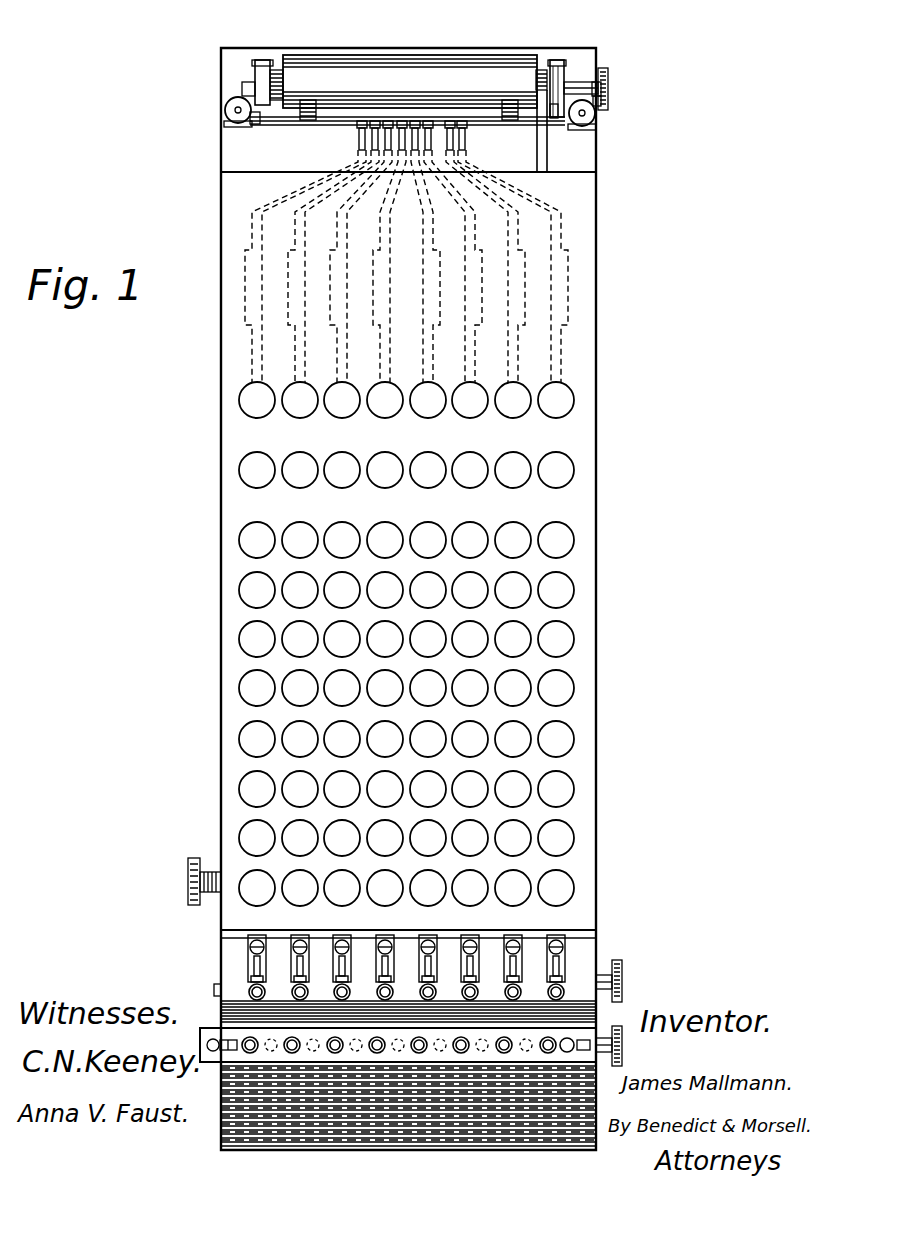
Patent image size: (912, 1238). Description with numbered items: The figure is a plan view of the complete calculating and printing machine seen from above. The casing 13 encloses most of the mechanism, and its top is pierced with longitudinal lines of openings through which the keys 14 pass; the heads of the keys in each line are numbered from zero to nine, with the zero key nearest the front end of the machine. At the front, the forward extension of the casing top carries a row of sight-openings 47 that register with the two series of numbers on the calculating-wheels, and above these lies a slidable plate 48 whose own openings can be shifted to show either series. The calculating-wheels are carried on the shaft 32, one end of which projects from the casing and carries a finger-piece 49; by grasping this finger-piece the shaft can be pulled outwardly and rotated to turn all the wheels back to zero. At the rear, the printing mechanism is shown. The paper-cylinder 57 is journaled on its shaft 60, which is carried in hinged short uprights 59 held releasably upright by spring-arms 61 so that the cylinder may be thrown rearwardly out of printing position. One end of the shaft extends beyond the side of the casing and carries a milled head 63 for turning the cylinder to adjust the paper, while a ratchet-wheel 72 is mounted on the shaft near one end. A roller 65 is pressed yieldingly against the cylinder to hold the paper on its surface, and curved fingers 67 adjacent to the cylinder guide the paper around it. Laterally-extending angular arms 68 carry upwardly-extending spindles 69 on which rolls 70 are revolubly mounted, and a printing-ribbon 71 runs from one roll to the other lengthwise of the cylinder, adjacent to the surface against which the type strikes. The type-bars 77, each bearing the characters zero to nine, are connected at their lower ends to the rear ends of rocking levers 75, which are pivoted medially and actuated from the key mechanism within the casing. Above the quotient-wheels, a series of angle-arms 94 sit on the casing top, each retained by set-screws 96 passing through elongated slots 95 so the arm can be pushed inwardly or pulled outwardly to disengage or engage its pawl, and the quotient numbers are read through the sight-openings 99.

The casing 13 is at (602, 668).
The keys 14 is at (239, 688).
The shaft of the calculating-wheels 32 is at (612, 1036).
The sight-openings 47 is at (214, 996).
The slidable plate 48 is at (212, 1063).
The finger-piece 49 is at (624, 996).
The paper-cylinder 57 is at (470, 62).
The short uprights 59 is at (263, 62).
The shaft of the paper-cylinder 60 is at (583, 80).
The spring-arms 61 is at (255, 125).
The milled head 63 is at (603, 100).
The roller 65 is at (548, 120).
The curved fingers 67 is at (307, 121).
The laterally-extending angular arms 68 is at (241, 90).
The spindles 69 is at (232, 108).
The rolls 70 is at (228, 120).
The printing-ribbon 71 is at (489, 126).
The ratchet-wheel 72 is at (542, 70).
The rocking levers 75 is at (563, 220).
The type-bars 77 is at (356, 145).
The angle-arms 94 is at (560, 965).
The elongated slots 95 is at (558, 962).
The set-screws 96 is at (250, 950).
The sight-openings 99 is at (250, 988).